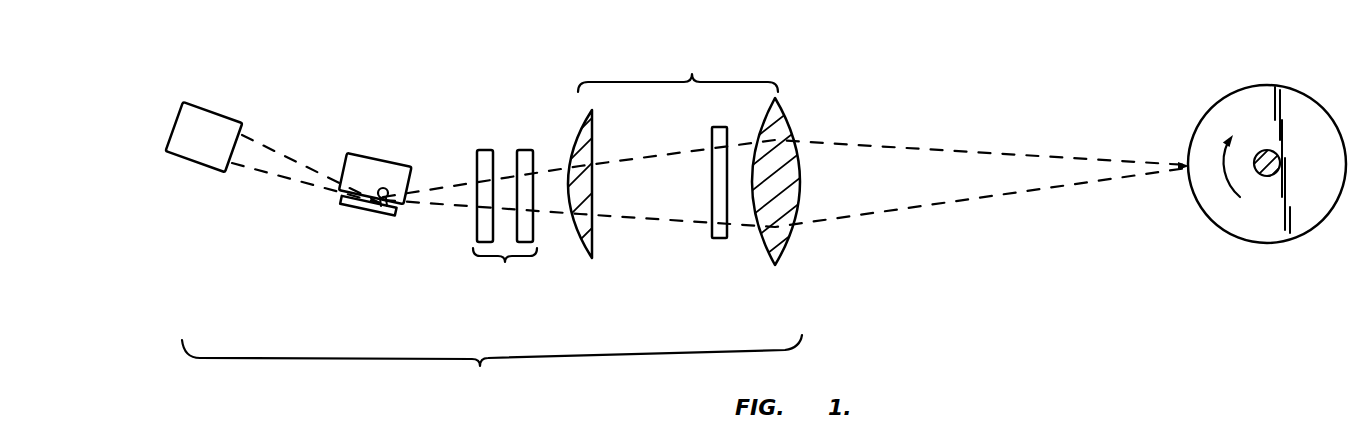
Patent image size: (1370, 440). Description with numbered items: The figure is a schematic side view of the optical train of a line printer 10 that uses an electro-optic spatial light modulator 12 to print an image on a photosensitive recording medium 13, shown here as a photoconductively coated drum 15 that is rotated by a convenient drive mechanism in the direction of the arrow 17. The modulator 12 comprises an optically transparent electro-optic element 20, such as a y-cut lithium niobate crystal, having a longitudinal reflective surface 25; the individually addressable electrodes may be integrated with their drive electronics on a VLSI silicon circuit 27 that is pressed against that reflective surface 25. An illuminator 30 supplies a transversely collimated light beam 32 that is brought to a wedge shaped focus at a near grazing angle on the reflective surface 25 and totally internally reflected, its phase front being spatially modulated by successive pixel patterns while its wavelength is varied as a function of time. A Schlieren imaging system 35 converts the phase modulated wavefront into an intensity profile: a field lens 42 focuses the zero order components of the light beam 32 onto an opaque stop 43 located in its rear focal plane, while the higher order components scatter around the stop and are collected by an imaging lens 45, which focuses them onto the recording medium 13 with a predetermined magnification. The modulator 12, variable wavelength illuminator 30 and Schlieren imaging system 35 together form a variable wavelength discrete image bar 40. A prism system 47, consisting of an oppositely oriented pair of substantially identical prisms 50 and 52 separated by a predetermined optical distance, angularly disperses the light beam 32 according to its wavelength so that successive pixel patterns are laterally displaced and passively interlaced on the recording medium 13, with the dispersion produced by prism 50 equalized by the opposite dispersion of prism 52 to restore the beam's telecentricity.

The line printer 10 is at (938, 59).
The electro-optic spatial light modulator 12 is at (401, 124).
The photosensitive recording medium 13 is at (1208, 113).
The photoconductively coated drum 15 is at (1225, 230).
The arrow 17 is at (1220, 173).
The electro-optic element 20 is at (348, 152).
The reflective surface 25 is at (379, 212).
The VLSI silicon circuit 27 is at (352, 212).
The illuminator 30 is at (180, 115).
The light beam 32 is at (263, 170).
The Schlieren imaging system 35 is at (678, 68).
The variable wavelength discrete image bar 40 is at (492, 366).
The field lens 42 is at (593, 243).
The opaque stop 43 is at (718, 238).
The imaging lens 45 is at (793, 238).
The prism system 47 is at (505, 271).
The first prism 50 is at (485, 148).
The second prism 52 is at (528, 148).